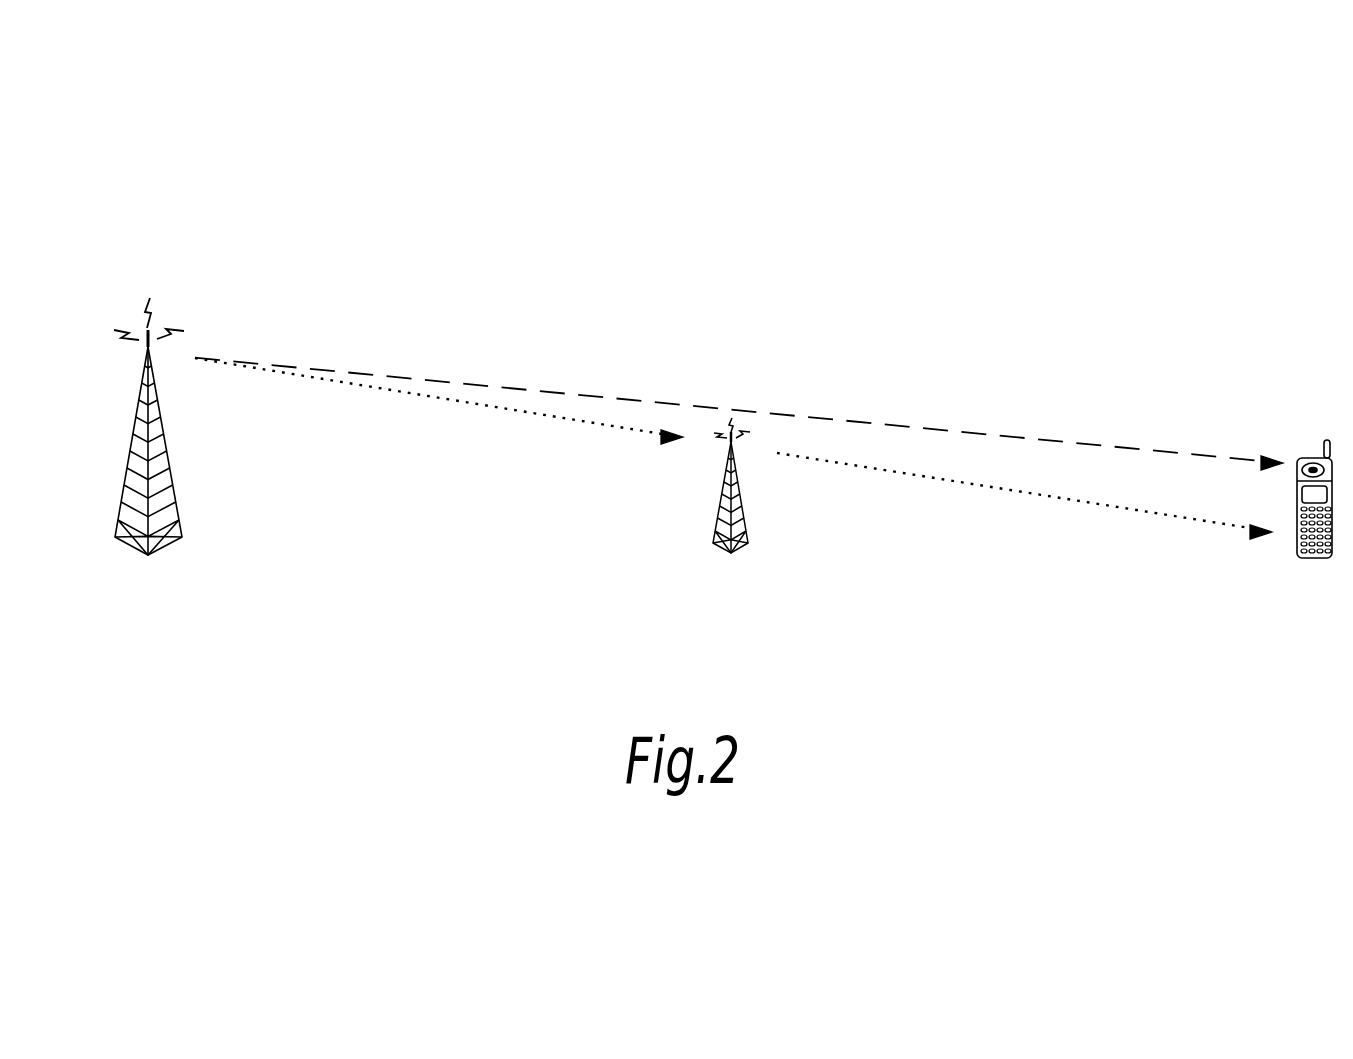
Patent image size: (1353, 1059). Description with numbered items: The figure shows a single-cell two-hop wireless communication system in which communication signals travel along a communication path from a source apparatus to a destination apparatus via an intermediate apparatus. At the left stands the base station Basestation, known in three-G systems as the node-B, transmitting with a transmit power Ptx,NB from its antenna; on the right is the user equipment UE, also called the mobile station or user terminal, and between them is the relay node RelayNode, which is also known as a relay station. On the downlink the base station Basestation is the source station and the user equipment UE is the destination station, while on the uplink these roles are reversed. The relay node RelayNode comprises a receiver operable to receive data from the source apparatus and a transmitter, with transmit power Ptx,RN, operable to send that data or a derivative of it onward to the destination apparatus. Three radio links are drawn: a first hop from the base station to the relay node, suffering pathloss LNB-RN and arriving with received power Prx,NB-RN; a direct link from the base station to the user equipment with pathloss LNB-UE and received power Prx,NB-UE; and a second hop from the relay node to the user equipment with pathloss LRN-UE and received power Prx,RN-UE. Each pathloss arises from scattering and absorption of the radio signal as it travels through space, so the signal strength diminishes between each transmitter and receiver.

The base station Basestation is at (151, 495).
The relay node RelayNode is at (732, 540).
The user equipment UE is at (1314, 519).
The base station transmit power Ptx,NB is at (113, 322).
The relay node transmit power Ptx,RN is at (770, 461).
The received power at relay node from base station Prx,NB-RN is at (638, 454).
The received power at user equipment from base station Prx,NB-UE is at (1219, 437).
The received power at user equipment from relay node Prx,RN-UE is at (1212, 542).
The pathloss between node-B and relay node LNB-RN is at (425, 399).
The pathloss between node-B and user equipment LNB-UE is at (725, 409).
The pathloss between relay node and user equipment LRN-UE is at (1013, 496).